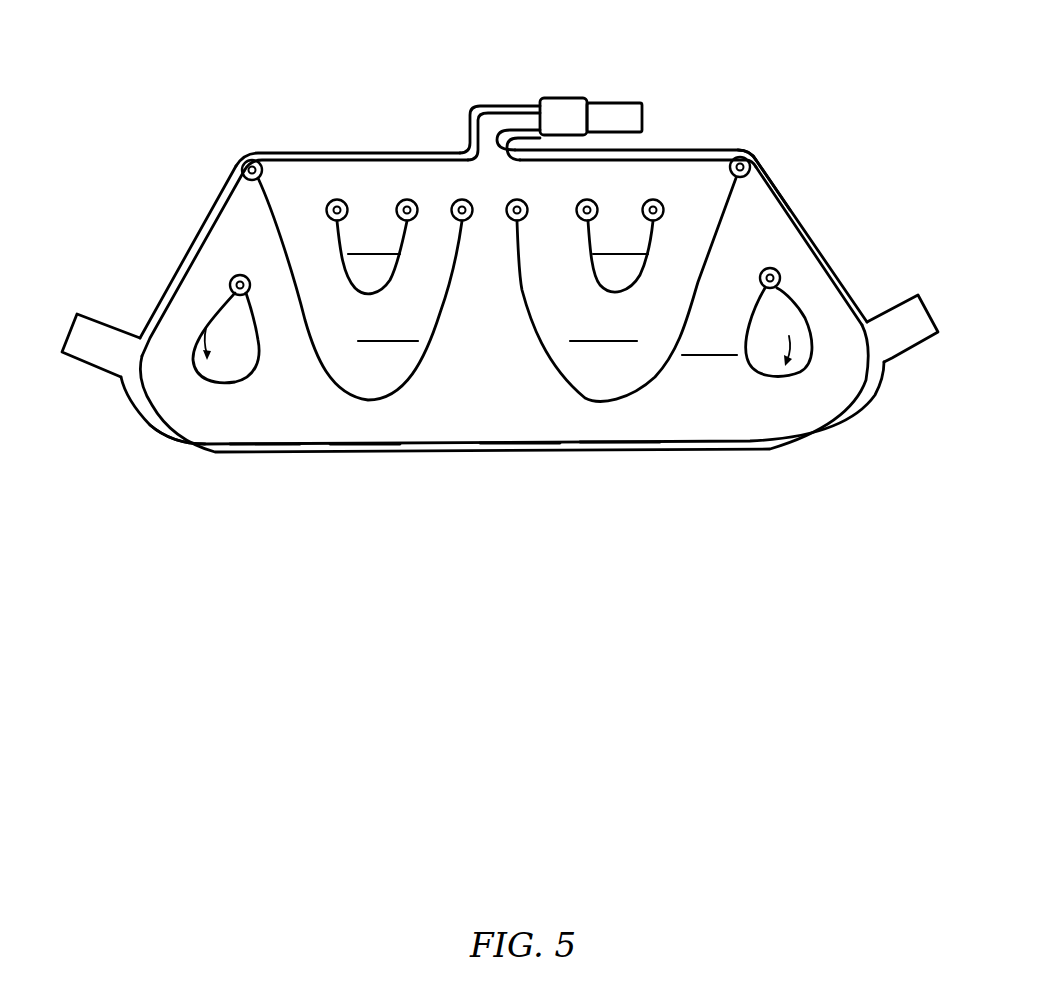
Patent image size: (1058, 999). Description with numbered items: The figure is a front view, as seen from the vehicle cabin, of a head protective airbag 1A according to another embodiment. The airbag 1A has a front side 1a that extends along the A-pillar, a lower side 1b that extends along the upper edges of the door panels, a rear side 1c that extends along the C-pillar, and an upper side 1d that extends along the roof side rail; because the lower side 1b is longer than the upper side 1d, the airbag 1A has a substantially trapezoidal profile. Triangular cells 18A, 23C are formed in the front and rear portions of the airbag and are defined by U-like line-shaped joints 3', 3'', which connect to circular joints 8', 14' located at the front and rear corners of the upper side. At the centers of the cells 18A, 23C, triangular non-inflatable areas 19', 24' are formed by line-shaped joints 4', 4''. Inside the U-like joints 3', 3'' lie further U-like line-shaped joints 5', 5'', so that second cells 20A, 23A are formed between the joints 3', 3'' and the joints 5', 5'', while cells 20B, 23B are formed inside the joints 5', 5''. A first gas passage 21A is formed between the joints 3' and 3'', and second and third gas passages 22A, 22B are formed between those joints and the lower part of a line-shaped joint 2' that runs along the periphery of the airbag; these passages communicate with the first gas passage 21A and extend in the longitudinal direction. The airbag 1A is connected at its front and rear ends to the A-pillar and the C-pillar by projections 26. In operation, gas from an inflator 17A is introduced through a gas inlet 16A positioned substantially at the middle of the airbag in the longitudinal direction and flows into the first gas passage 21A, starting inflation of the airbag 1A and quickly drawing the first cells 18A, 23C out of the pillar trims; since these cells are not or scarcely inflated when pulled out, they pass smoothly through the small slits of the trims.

The airbag 1A is at (776, 170).
The front side 1a is at (188, 244).
The lower side 1b is at (738, 450).
The rear side 1c is at (843, 282).
The upper side 1d is at (338, 150).
The line-shaped joint 2' is at (265, 472).
The line-shaped joint 3' is at (360, 289).
The line-shaped joint 3'' is at (626, 294).
The line-shaped joint 4' is at (249, 346).
The line-shaped joint 4'' is at (799, 347).
The line-shaped joint 5' is at (388, 257).
The line-shaped joint 5'' is at (644, 256).
The circular joint 8' is at (236, 123).
The circular joint 14' is at (746, 119).
The gas inlet 16A is at (483, 100).
The inflator 17A is at (628, 100).
The triangular cell 18A is at (198, 420).
The triangular non-inflatable area 19' is at (229, 317).
The second cell 20A is at (415, 271).
The cell 20B is at (372, 229).
The first gas passage 21A is at (490, 317).
The second gas passage 22A is at (362, 423).
The third gas passage 22B is at (613, 423).
The second cell 23A is at (572, 271).
The cell 23B is at (620, 229).
The triangular cell 23C is at (712, 337).
The triangular non-inflatable area 24' is at (779, 317).
The projection 26 is at (73, 317).